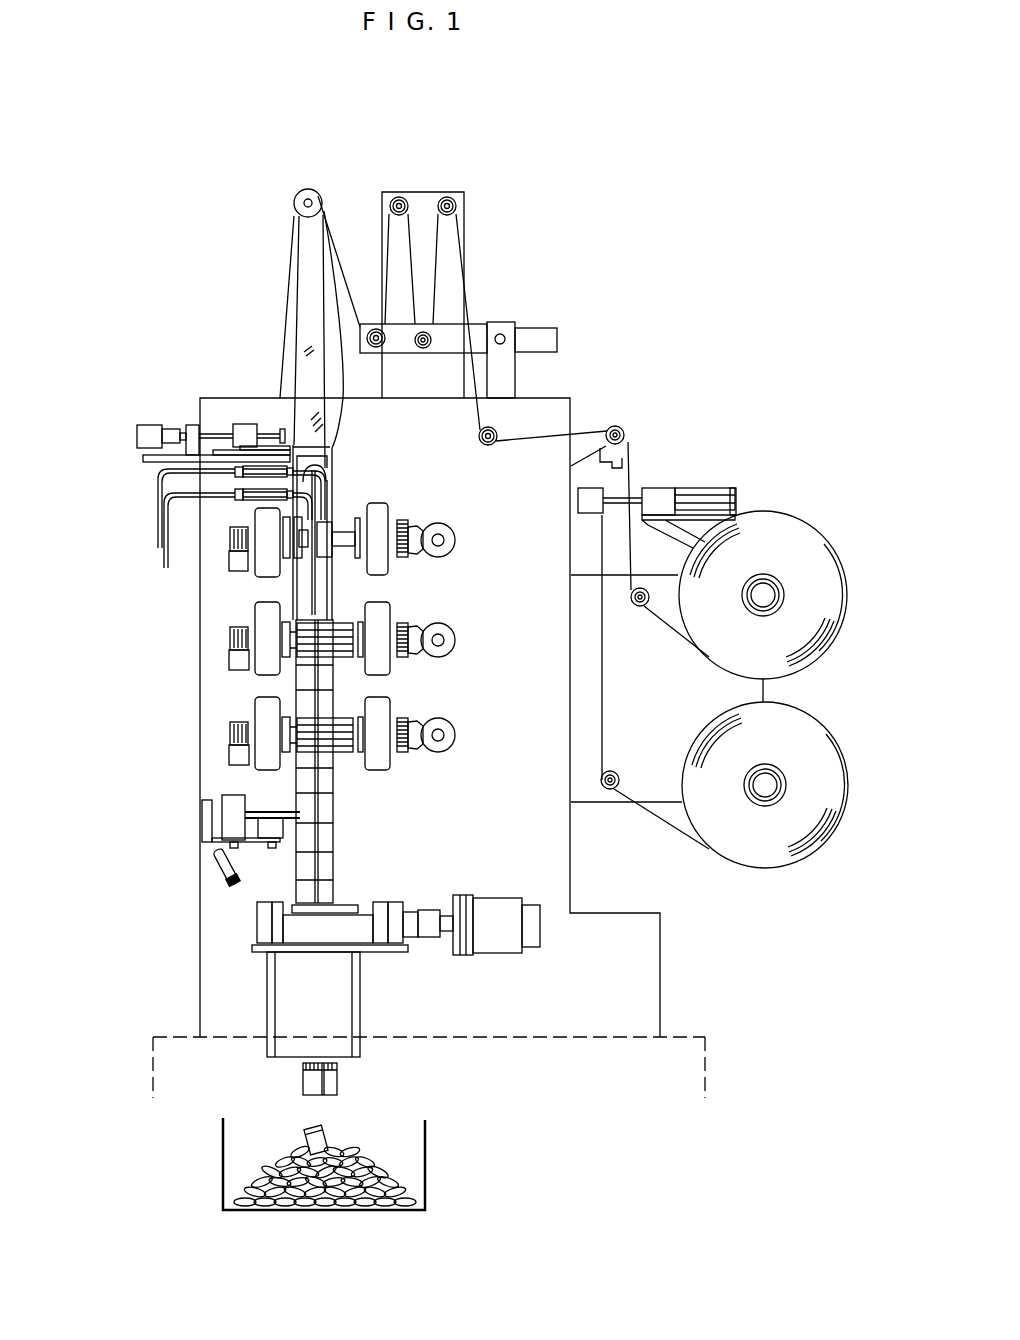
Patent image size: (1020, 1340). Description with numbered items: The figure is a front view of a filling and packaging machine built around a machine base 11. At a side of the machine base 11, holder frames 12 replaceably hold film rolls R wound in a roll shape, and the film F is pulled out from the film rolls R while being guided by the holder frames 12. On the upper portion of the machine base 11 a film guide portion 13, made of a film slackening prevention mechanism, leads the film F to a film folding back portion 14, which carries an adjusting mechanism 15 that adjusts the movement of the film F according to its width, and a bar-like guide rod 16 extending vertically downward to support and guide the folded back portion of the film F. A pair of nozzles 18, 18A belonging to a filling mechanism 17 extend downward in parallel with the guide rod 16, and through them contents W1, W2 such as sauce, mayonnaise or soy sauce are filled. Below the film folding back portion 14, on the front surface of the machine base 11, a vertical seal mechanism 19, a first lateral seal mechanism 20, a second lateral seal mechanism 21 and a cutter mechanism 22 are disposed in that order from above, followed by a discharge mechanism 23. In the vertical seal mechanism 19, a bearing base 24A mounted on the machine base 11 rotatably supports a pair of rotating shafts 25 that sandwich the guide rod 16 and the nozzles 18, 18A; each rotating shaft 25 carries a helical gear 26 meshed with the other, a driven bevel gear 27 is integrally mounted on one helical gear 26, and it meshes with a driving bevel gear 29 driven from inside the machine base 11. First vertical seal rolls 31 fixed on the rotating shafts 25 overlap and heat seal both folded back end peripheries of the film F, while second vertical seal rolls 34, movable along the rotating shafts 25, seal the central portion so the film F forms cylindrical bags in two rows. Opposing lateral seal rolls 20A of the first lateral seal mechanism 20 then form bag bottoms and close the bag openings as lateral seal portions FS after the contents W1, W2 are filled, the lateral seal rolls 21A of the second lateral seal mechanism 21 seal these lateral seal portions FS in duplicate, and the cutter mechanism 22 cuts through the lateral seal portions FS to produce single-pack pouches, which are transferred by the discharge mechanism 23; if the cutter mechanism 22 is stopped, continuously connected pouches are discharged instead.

The machine base 11 is at (672, 958).
The holder frame 12 is at (785, 582).
The film guide portion 13 is at (470, 247).
The film folding back portion 14 is at (242, 407).
The adjusting mechanism 15 is at (148, 435).
The guide rod 16 is at (317, 472).
The filling mechanism 17 is at (143, 503).
The nozzle 18 is at (307, 583).
The nozzle 18A is at (315, 468).
The vertical seal mechanism 19 is at (262, 555).
The first lateral seal mechanism 20 is at (265, 641).
The lateral seal roll 20A is at (325, 640).
The second lateral seal mechanism 21 is at (265, 749).
The lateral seal roll 21A is at (333, 733).
The cutter mechanism 22 is at (292, 918).
The discharge mechanism 23 is at (342, 987).
The bearing base 24A is at (267, 567).
The rotating shaft 25 is at (343, 543).
The helical gear 26 is at (403, 522).
The driven bevel gear 27 is at (423, 558).
The driving bevel gear 29 is at (458, 533).
The first vertical seal roll 31 is at (297, 533).
The second vertical seal roll 34 is at (317, 538).
The film F is at (307, 343).
The film roll R is at (825, 615).
The contents W1 is at (318, 1080).
The contents W2 is at (333, 1087).
The lateral seal portion FS is at (328, 1095).